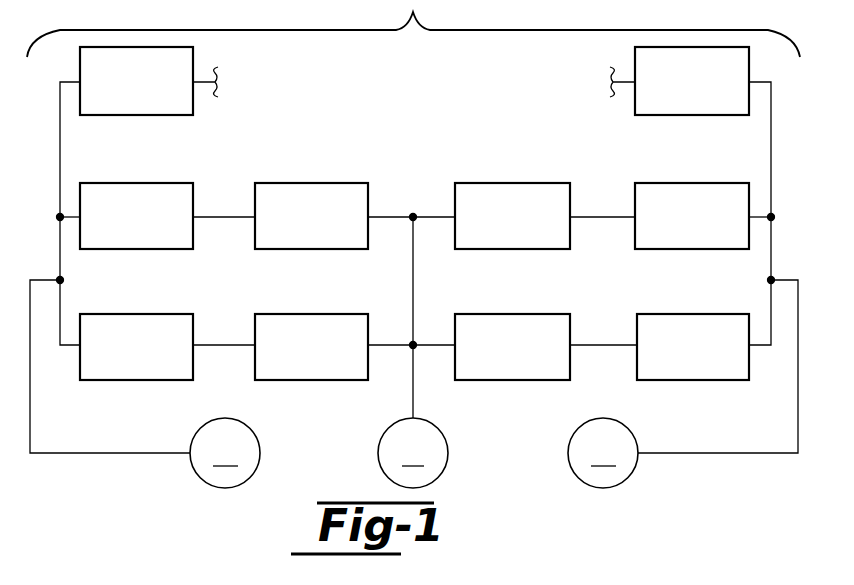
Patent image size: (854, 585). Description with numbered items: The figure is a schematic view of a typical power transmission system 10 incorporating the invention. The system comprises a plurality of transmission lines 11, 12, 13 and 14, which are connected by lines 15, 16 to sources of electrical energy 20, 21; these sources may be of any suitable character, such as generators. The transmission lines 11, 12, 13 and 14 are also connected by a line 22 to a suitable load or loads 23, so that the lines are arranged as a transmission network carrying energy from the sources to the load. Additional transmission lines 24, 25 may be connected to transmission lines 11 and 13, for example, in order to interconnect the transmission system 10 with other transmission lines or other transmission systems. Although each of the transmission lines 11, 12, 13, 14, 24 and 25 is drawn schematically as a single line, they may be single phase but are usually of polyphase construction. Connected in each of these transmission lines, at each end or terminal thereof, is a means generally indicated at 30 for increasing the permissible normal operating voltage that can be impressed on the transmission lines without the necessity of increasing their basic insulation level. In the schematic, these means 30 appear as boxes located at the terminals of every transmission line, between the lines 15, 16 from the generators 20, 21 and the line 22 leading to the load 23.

The transmission system 10 is at (413, 28).
The transmission line 11 is at (227, 217).
The transmission line 12 is at (230, 344).
The transmission line 13 is at (606, 217).
The transmission line 14 is at (614, 345).
The line 15 is at (30, 415).
The line 16 is at (798, 410).
The source of electrical energy 20 is at (237, 417).
The source of electrical energy 21 is at (611, 417).
The line 22 is at (413, 285).
The load 23 is at (443, 432).
The additional transmission line 24 is at (60, 152).
The additional transmission line 25 is at (771, 148).
The means for increasing permissible normal operating voltage 30 is at (193, 105).